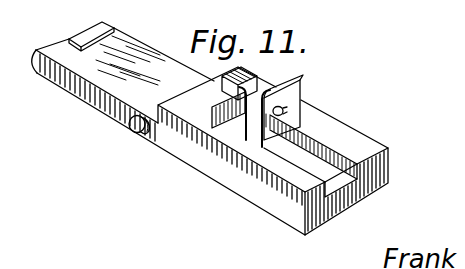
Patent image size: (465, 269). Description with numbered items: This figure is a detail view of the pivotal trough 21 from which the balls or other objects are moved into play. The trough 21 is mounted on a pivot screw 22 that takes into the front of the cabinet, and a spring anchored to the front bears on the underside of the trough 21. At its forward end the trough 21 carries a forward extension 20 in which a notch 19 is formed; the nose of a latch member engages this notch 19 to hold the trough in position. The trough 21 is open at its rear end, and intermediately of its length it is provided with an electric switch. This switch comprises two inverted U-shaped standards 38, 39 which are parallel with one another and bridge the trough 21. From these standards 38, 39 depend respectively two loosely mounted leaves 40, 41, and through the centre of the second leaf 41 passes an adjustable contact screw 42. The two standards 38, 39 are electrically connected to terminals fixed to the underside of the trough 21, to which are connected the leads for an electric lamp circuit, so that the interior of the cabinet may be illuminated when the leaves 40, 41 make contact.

The notch 19 is at (90, 37).
The forward extension 20 is at (97, 77).
The trough 21 is at (273, 151).
The pivot screw 22 is at (130, 128).
The standard 38 is at (244, 135).
The standard 39 is at (261, 149).
The leaf 40 is at (233, 125).
The leaf 41 is at (302, 96).
The adjustable contact screw 42 is at (303, 110).